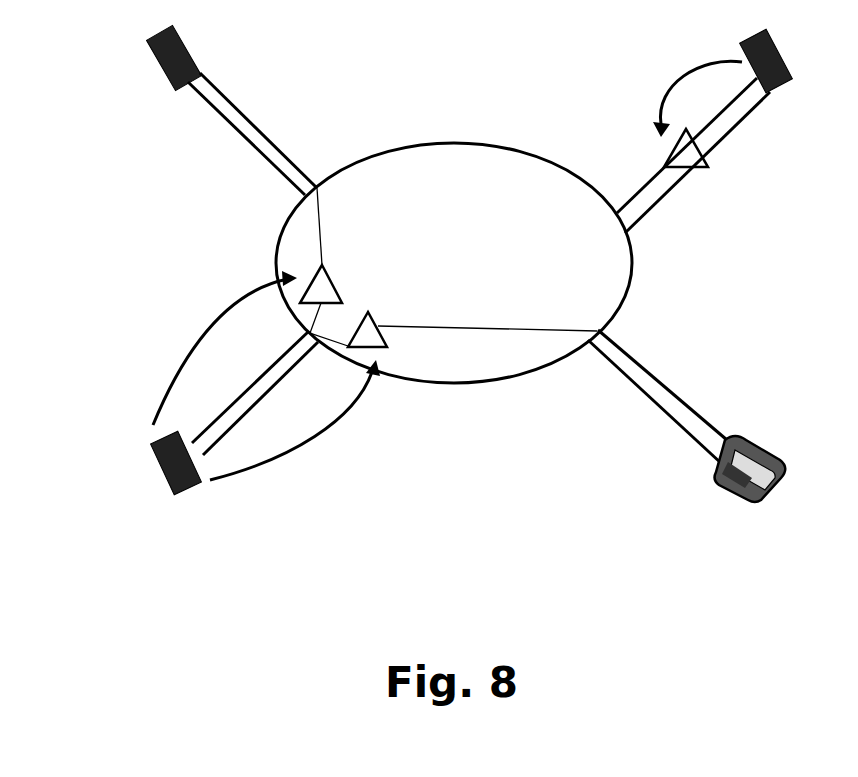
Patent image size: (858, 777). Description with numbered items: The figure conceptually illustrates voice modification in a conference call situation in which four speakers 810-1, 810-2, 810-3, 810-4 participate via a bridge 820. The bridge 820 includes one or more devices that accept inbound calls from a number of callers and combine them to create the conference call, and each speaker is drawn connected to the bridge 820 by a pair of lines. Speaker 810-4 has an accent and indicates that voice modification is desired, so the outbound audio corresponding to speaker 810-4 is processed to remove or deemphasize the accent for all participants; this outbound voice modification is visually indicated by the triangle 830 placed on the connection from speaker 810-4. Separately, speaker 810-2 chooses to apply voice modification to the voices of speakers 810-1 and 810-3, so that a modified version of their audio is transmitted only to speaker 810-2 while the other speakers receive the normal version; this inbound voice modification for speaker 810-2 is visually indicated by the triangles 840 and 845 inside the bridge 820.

The speaker 810-1 is at (167, 78).
The speaker 810-2 is at (175, 494).
The speaker 810-3 is at (726, 505).
The speaker 810-4 is at (790, 88).
The bridge 820 is at (500, 147).
The triangle 830 is at (708, 168).
The triangle 840 is at (387, 347).
The triangle 845 is at (323, 266).